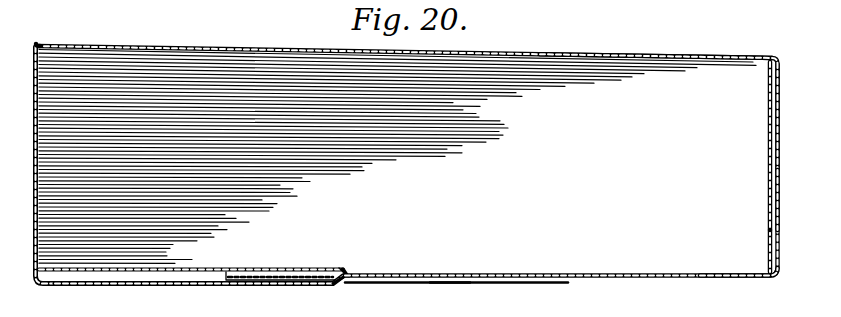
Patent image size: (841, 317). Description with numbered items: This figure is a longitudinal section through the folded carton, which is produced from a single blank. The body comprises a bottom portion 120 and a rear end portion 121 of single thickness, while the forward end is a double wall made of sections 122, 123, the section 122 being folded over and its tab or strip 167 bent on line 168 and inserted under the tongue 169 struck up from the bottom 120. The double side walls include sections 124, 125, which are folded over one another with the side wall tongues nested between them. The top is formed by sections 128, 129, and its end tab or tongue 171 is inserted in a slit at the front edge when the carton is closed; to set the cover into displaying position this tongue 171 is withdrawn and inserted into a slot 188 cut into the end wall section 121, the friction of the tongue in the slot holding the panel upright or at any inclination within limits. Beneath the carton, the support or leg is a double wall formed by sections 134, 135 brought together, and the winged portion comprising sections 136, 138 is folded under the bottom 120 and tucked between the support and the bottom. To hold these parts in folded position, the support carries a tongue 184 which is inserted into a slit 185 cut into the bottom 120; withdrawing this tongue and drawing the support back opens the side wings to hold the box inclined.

The bottom portion 120 is at (588, 274).
The rear end portion 121 is at (35, 122).
The forward end wall section 122 is at (770, 207).
The forward end wall section 123 is at (767, 178).
The side wall section 124 is at (397, 157).
The side wall section 125 is at (484, 274).
The top section 128 is at (148, 46).
The top section 129 is at (558, 52).
The support section 134 is at (200, 286).
The support section 135 is at (173, 286).
The winged support section 136 is at (347, 280).
The winged support section 138 is at (301, 287).
The tab 167 is at (755, 277).
The bend line 168 is at (768, 271).
The struck-up tongue 169 is at (450, 300).
The end tab 171 is at (767, 94).
The tongue 184 is at (350, 271).
The slit 185 is at (342, 272).
The slot 188 is at (34, 66).